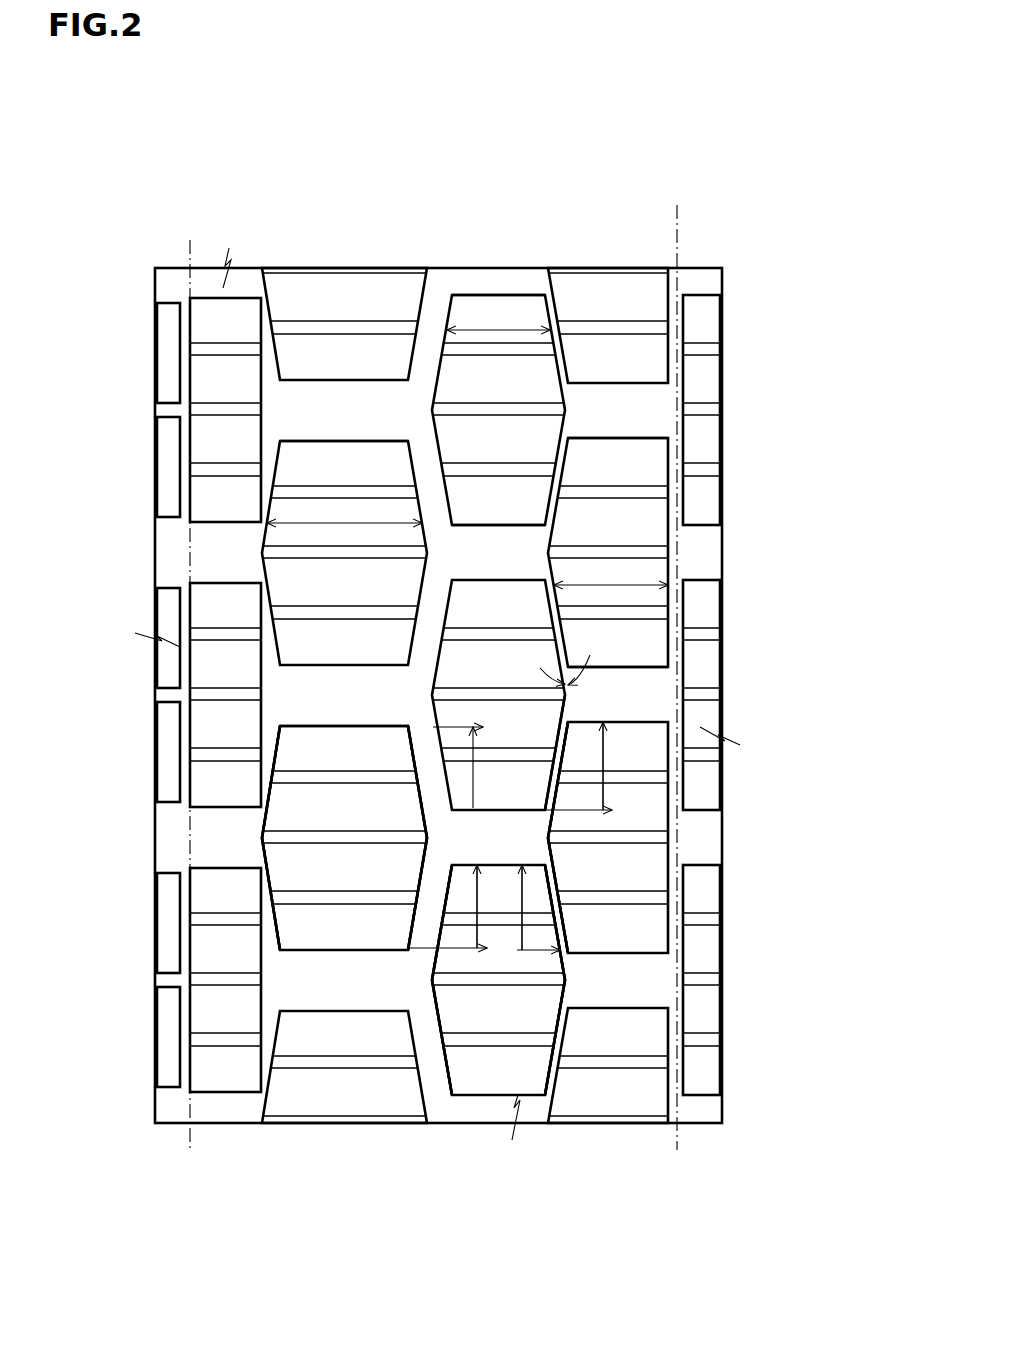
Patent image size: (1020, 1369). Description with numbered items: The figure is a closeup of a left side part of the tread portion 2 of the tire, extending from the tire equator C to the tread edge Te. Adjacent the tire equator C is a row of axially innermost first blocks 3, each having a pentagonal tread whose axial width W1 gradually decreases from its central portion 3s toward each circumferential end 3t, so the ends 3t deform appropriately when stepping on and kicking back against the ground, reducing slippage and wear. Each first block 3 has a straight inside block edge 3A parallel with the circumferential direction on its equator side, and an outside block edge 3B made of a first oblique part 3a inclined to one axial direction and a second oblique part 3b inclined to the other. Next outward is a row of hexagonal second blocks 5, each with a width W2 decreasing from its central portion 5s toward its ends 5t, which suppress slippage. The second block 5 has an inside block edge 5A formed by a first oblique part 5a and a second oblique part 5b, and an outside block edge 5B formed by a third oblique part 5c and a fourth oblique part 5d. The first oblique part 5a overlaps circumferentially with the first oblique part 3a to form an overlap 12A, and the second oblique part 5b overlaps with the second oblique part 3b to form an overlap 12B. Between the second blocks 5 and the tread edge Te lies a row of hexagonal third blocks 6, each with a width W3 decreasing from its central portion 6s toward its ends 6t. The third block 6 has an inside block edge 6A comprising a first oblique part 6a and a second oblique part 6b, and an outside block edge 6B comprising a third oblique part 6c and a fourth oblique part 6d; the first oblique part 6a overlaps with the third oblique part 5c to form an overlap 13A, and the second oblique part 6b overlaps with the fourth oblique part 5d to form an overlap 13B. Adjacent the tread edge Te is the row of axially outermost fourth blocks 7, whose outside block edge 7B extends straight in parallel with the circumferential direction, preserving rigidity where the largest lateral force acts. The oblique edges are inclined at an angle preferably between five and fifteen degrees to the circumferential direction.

The tread portion 2 is at (100, 168).
The axially innermost first block 3 is at (602, 458).
The end of the axially innermost first block 3t is at (650, 457).
The central portion of the axially innermost first block 3s is at (623, 553).
The inside block edge of the axially innermost first block 3A is at (683, 812).
The first oblique part 3a is at (555, 875).
The second oblique part 3b is at (555, 900).
The outside block edge of the axially innermost first block 3B is at (798, 880).
The second block 5 is at (488, 305).
The end of the second block 5t is at (525, 307).
The central portion of the second block 5s is at (517, 410).
The first oblique part 5a is at (545, 870).
The second oblique part 5b is at (570, 720).
The third oblique part 5c is at (380, 727).
The fourth oblique part 5d is at (475, 905).
The inside block edge of the second block 5A is at (693, 1192).
The outside block edge of the second block 5B is at (457, 1260).
The third block 6 is at (297, 553).
The central portion of the third block 6s is at (344, 552).
The end of the third block 6t is at (370, 450).
The first oblique part 6a is at (425, 847).
The second oblique part 6b is at (422, 910).
The third oblique part 6c is at (262, 852).
The fourth oblique part 6d is at (263, 816).
The inside block edge of the third block 6A is at (343, 1192).
The outside block edge of the third block 6B is at (82, 805).
The fourth block 7 is at (245, 1075).
The outside block edge of the fourth block 7B is at (187, 950).
The overlap 12A is at (540, 905).
The overlap 12B is at (603, 760).
The overlap 13A is at (472, 773).
The overlap 13B is at (490, 915).
The width of the axially innermost first block W1 is at (632, 583).
The width of the second block W2 is at (487, 330).
The width of the third block W3 is at (343, 527).
The tread edge Te is at (187, 283).
The tire equator C is at (677, 243).